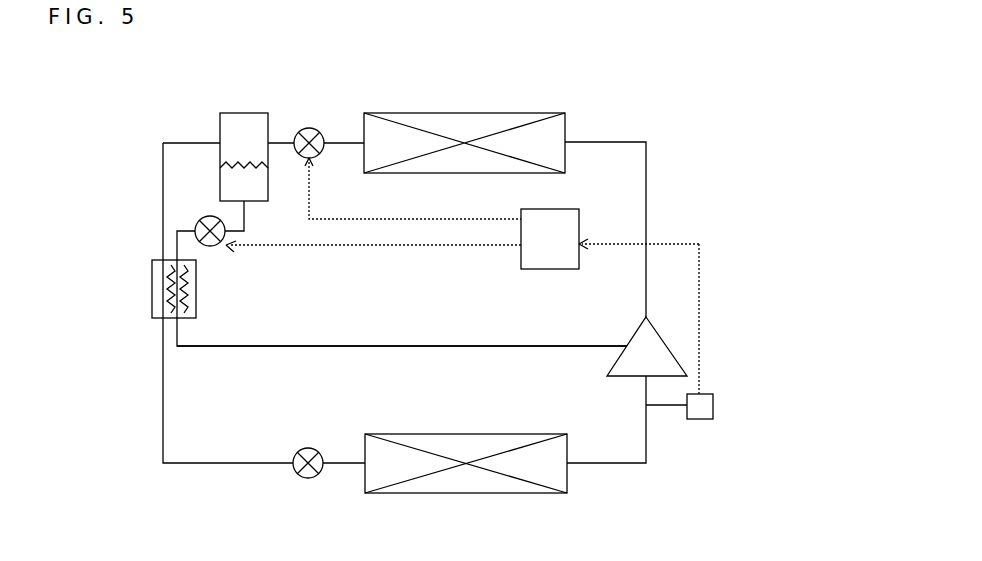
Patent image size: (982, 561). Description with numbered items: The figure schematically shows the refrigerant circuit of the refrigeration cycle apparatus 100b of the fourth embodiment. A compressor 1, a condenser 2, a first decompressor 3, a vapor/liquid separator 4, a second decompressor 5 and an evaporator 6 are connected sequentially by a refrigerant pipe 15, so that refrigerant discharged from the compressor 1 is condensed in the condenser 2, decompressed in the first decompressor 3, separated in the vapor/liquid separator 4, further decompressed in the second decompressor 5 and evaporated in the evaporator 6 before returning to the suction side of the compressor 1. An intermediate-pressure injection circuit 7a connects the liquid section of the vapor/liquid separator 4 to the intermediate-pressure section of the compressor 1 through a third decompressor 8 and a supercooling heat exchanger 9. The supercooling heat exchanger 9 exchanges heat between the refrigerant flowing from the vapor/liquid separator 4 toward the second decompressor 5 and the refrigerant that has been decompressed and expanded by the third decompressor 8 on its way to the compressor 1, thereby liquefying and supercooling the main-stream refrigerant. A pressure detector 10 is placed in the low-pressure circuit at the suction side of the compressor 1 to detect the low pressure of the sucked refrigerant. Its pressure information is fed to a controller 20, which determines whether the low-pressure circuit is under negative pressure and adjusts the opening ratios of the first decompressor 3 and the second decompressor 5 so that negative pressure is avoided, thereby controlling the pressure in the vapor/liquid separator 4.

The refrigeration cycle apparatus 100b is at (163, 112).
The compressor 1 is at (640, 377).
The condenser 2 is at (495, 113).
The first decompressor 3 is at (312, 128).
The vapor/liquid separator 4 is at (243, 113).
The second decompressor 5 is at (300, 478).
The evaporator 6 is at (450, 493).
The intermediate-pressure injection circuit 7a is at (412, 346).
The third decompressor 8 is at (216, 243).
The supercooling heat exchanger 9 is at (152, 275).
The pressure detector 10 is at (708, 394).
The refrigerant pipe 15 is at (605, 142).
The controller 20 is at (551, 209).